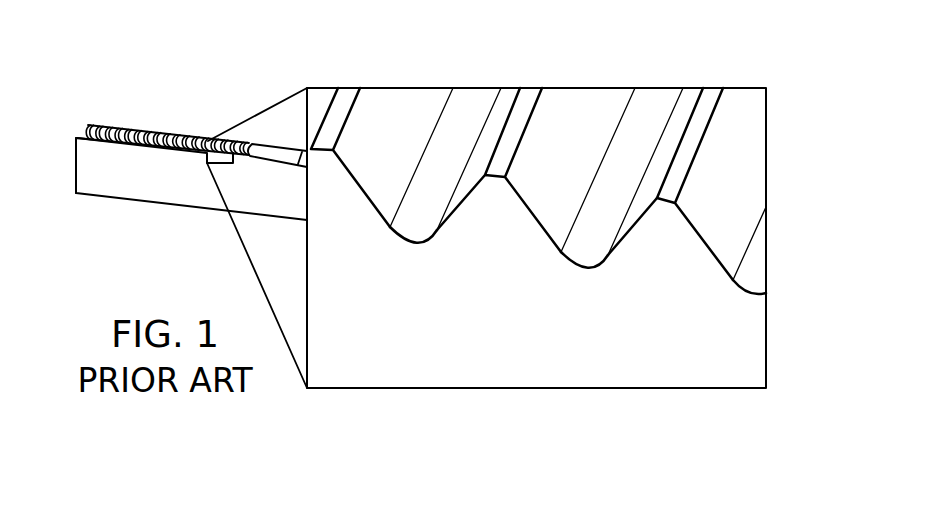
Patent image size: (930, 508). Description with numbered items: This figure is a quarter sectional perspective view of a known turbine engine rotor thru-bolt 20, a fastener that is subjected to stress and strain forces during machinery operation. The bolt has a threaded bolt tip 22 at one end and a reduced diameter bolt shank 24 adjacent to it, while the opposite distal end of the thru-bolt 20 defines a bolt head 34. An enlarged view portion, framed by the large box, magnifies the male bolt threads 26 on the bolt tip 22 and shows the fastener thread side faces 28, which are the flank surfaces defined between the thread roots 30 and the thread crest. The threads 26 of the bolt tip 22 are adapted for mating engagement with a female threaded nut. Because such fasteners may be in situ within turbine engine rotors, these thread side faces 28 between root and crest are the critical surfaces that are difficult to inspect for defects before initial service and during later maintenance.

The turbine engine rotor thru-bolt 20 is at (182, 234).
The threaded bolt tip 22 is at (76, 165).
The reduced diameter bolt shank 24 is at (263, 156).
The male bolt threads 26 is at (172, 130).
The fastener thread side faces 28 is at (537, 190).
The thread roots 30 is at (583, 243).
The bolt head 34 is at (692, 138).